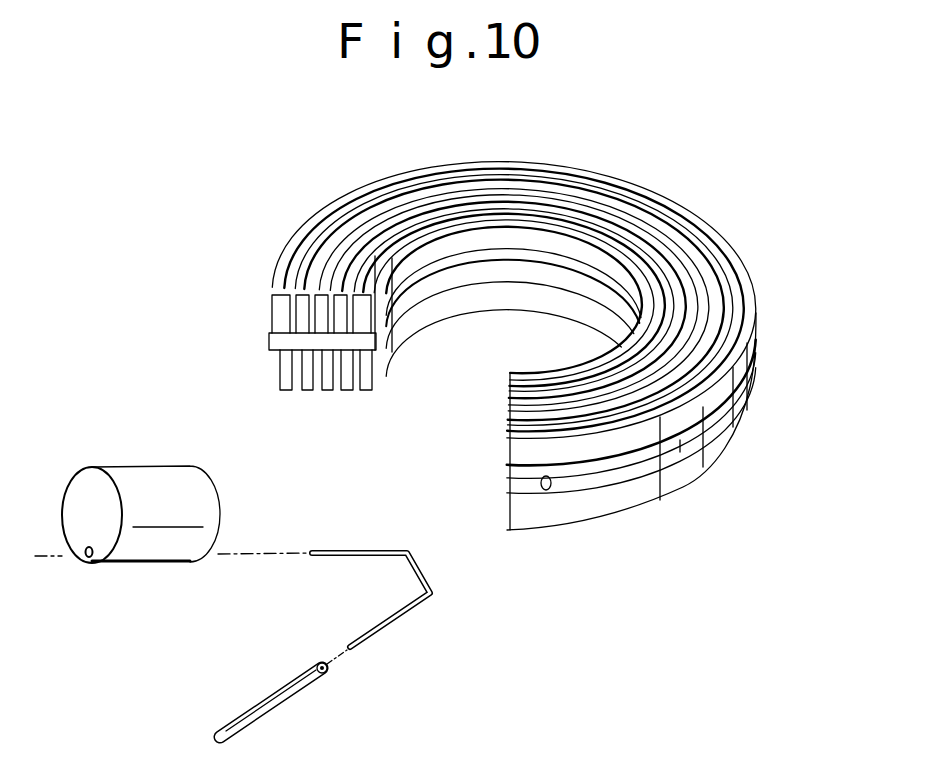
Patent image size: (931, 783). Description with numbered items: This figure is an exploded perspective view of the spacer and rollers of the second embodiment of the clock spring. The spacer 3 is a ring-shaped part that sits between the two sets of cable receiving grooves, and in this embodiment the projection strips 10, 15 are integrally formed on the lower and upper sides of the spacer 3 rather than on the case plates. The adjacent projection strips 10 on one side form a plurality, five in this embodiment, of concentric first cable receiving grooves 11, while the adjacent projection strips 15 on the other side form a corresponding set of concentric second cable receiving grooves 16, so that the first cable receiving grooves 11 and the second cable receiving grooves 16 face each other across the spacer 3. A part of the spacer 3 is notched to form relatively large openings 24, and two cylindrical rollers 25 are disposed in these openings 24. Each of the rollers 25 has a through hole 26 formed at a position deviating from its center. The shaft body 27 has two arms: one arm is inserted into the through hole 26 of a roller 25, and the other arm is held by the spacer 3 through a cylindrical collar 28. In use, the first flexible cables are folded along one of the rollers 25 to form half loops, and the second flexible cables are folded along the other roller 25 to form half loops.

The spacer 3 is at (289, 374).
The projection strips 10 is at (280, 370).
The first cable receiving grooves 11 is at (317, 390).
The projection strips 15 is at (283, 262).
The second cable receiving grooves 16 is at (322, 233).
The openings 24 is at (480, 452).
The rollers 25 is at (165, 540).
The through hole 26 is at (90, 557).
The shaft body 27 is at (393, 625).
The cylindrical collar 28 is at (275, 715).